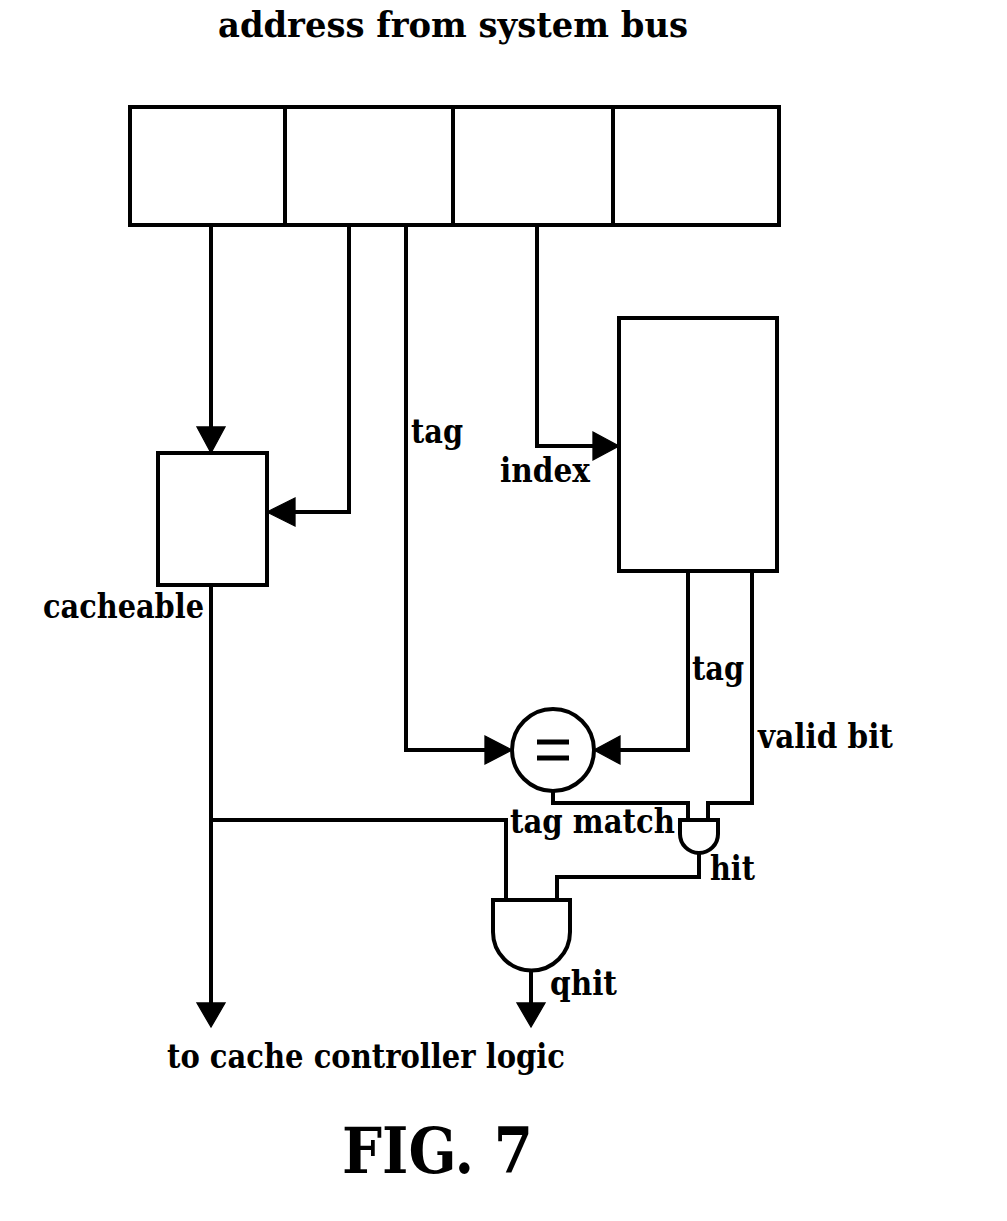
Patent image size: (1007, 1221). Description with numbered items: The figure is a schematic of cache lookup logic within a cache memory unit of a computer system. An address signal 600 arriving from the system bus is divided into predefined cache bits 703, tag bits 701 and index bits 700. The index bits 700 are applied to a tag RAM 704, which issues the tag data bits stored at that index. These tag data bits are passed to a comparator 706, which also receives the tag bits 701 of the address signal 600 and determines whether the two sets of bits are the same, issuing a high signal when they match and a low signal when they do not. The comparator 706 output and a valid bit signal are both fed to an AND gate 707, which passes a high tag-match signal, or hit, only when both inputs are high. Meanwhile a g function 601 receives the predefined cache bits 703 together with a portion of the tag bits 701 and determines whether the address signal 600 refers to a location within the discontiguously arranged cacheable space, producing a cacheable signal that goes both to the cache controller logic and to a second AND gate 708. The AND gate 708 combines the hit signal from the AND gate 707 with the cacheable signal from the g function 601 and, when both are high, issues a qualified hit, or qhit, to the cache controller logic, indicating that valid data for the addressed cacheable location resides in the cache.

The address signal 600 is at (223, 85).
The predefined cache bits 703 is at (207, 166).
The tag bits 701 is at (369, 166).
The index bits 700 is at (533, 166).
The tag RAM 704 is at (791, 376).
The g function 601 is at (144, 541).
The comparator 706 is at (518, 706).
The AND gate 707 is at (735, 823).
The AND gate 708 is at (586, 922).